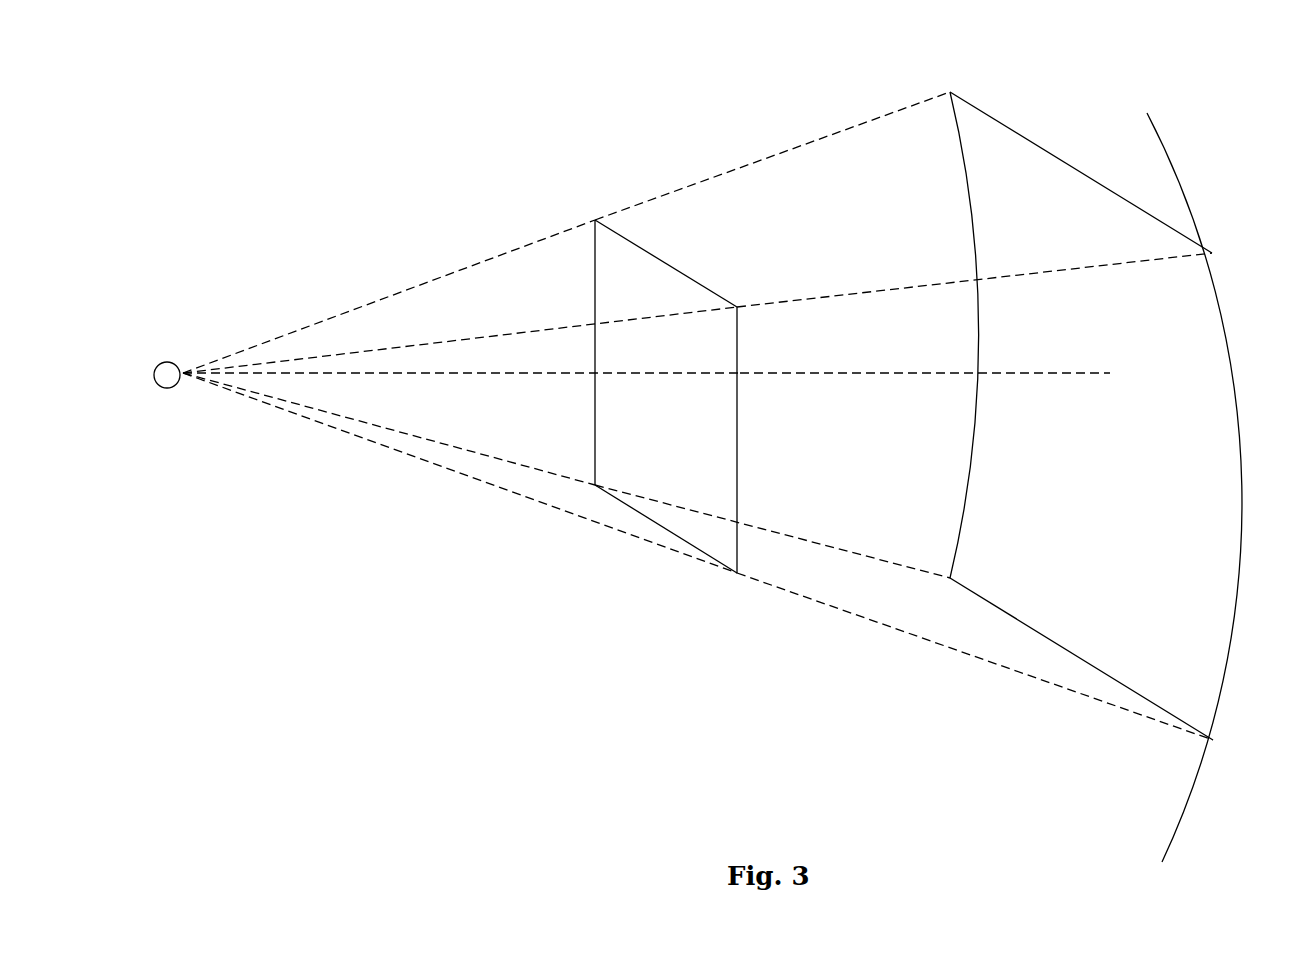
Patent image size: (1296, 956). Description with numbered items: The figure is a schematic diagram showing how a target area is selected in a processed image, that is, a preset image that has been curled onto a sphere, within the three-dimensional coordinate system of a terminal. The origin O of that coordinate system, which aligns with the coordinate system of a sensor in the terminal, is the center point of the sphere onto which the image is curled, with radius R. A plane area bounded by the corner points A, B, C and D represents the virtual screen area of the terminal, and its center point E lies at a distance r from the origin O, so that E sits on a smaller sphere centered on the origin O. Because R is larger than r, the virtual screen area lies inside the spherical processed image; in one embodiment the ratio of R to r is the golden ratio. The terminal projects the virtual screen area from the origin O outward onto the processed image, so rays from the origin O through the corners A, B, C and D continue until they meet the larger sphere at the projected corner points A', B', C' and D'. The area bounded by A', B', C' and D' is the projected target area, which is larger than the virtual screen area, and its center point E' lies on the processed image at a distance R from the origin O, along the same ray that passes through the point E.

The origin O is at (159, 396).
The corner point A of the virtual screen area A is at (656, 250).
The corner point B of the virtual screen area B is at (754, 440).
The corner point C of the virtual screen area C is at (678, 530).
The corner point D of the virtual screen area D is at (607, 352).
The center point of the virtual screen area E is at (461, 391).
The corner point A' of the projected target area A' is at (1065, 156).
The corner point B' of the projected target area B' is at (1209, 487).
The corner point C' of the projected target area C' is at (1106, 667).
The corner point D' of the projected target area D' is at (970, 340).
The center point of the projected target area E' is at (941, 401).